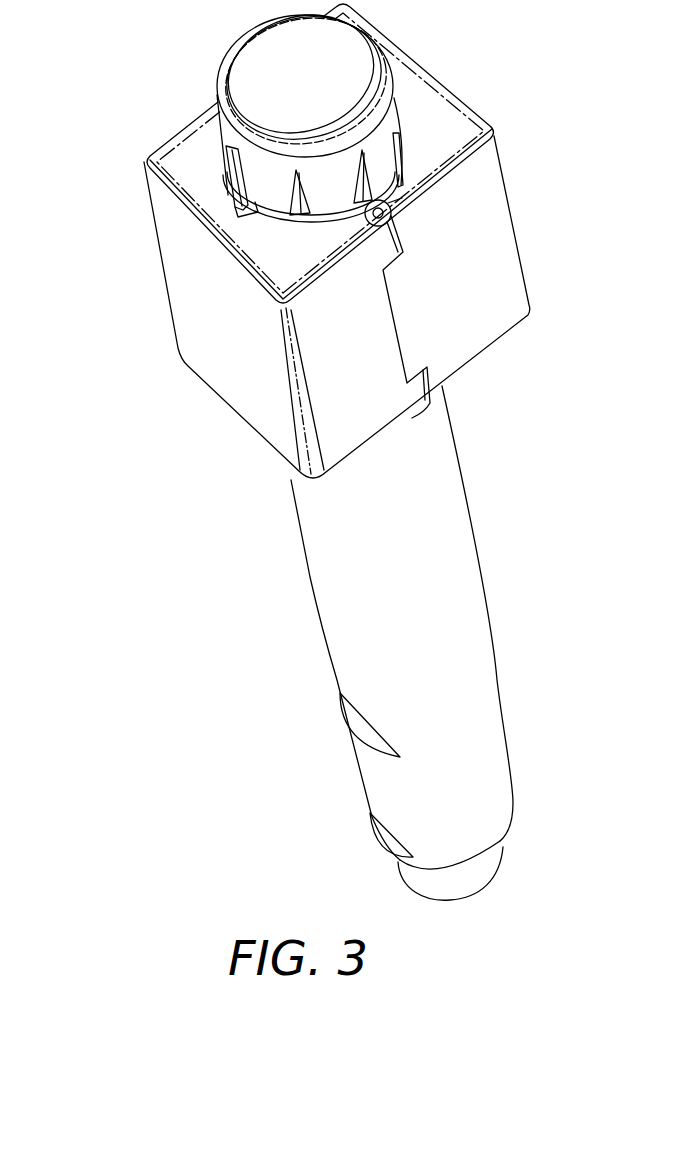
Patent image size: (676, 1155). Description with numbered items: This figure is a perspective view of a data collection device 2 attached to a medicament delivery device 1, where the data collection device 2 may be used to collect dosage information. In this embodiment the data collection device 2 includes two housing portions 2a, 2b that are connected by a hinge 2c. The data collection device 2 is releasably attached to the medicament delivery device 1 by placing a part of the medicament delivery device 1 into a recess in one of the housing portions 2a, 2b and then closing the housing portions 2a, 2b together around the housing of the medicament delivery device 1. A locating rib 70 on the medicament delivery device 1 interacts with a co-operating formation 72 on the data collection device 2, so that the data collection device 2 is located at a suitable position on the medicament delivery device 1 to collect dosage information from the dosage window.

The medicament delivery device 1 is at (300, 695).
The data collection device 2 is at (295, 239).
The housing portion 2a is at (192, 142).
The housing portion 2b is at (451, 113).
The hinge 2c is at (410, 232).
The locating rib 70 is at (231, 184).
The co-operating formation 72 is at (250, 211).